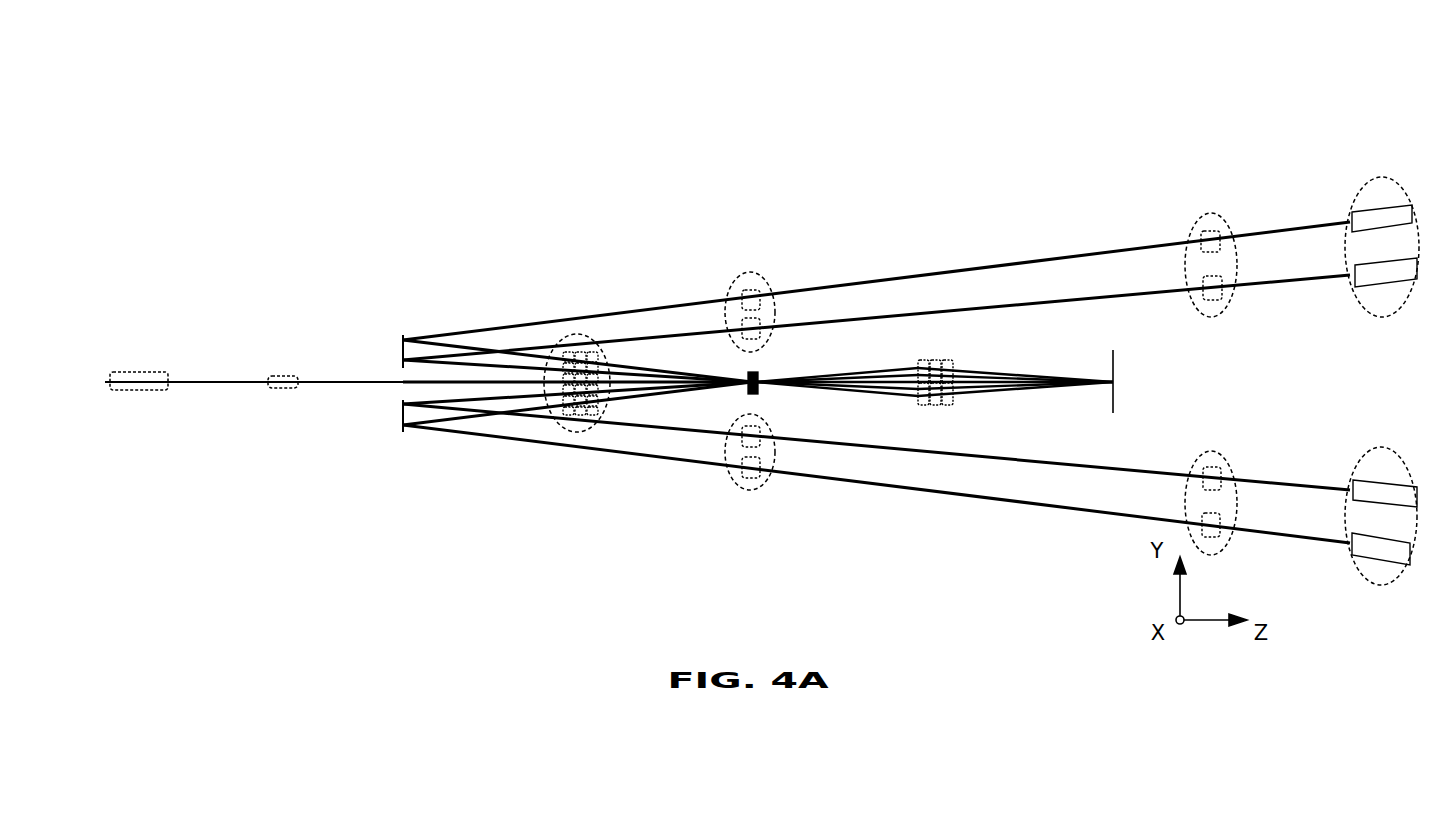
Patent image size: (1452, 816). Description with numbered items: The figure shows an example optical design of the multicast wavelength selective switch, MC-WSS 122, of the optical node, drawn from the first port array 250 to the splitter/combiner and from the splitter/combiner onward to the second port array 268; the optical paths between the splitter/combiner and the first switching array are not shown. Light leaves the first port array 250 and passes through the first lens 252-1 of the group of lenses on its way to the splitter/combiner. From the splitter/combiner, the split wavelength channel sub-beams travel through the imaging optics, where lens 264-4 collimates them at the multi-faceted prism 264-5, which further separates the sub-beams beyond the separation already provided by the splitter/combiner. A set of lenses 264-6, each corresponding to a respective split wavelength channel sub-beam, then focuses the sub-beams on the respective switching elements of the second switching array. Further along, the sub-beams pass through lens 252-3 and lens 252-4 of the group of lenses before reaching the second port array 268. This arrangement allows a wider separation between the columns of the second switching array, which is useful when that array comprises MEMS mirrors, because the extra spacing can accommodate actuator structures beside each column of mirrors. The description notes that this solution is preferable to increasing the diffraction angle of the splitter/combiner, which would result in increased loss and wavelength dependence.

The MC-WSS 122 is at (220, 107).
The first port array 250 is at (254, 399).
The lens 252-1 is at (282, 401).
The set of lenses 264-6 is at (578, 335).
The multi-faceted prism 264-5 is at (752, 363).
The lens 264-4 is at (932, 370).
The lens 252-3 is at (748, 272).
The lens 252-4 is at (1210, 320).
The second port array 268 is at (1383, 320).